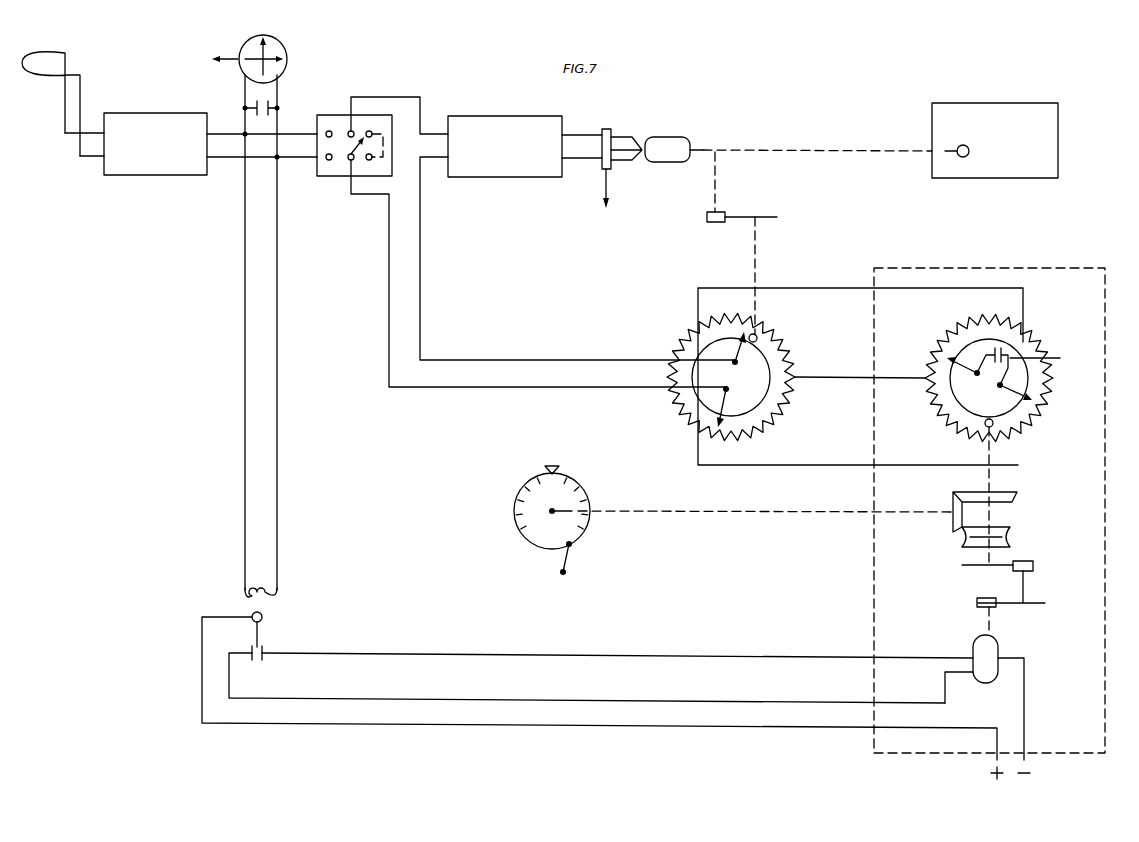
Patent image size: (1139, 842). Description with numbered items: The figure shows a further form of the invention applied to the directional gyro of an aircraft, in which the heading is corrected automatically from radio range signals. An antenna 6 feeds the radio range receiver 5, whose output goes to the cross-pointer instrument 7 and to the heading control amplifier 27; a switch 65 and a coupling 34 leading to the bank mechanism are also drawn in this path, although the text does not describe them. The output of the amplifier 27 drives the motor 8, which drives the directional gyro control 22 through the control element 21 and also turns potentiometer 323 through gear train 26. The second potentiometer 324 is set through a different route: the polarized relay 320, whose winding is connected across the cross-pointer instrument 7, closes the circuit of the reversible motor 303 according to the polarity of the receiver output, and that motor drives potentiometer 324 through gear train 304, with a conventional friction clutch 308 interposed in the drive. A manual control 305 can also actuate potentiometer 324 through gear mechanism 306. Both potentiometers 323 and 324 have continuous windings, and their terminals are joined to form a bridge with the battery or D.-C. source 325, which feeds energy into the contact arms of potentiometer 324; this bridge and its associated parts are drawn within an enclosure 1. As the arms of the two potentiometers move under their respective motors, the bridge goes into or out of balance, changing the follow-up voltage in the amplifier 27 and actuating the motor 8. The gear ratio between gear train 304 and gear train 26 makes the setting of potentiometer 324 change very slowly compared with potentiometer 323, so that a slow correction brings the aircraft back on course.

The antenna 6 is at (31, 70).
The radio range receiver 5 is at (158, 163).
The cross-pointer instrument 7 is at (280, 48).
The switch 65 is at (334, 164).
The heading control amplifier 27 is at (498, 117).
The coupling to bank mechanism 34 is at (608, 128).
The motor 8 is at (674, 136).
The gear train 26 is at (745, 206).
The control element 21 is at (969, 148).
The directional gyro control 22 is at (995, 156).
The enclosure 1 is at (1050, 228).
The potentiometer 323 is at (778, 347).
The potentiometer 324 is at (1025, 348).
The battery or D.-C. source 325 is at (1037, 366).
The manual control 305 is at (583, 523).
The gear mechanism 306 is at (1012, 498).
The friction clutch 308 is at (1003, 542).
The gear train 304 is at (1003, 575).
The reversible motor 303 is at (975, 648).
The polarized relay 320 is at (270, 585).